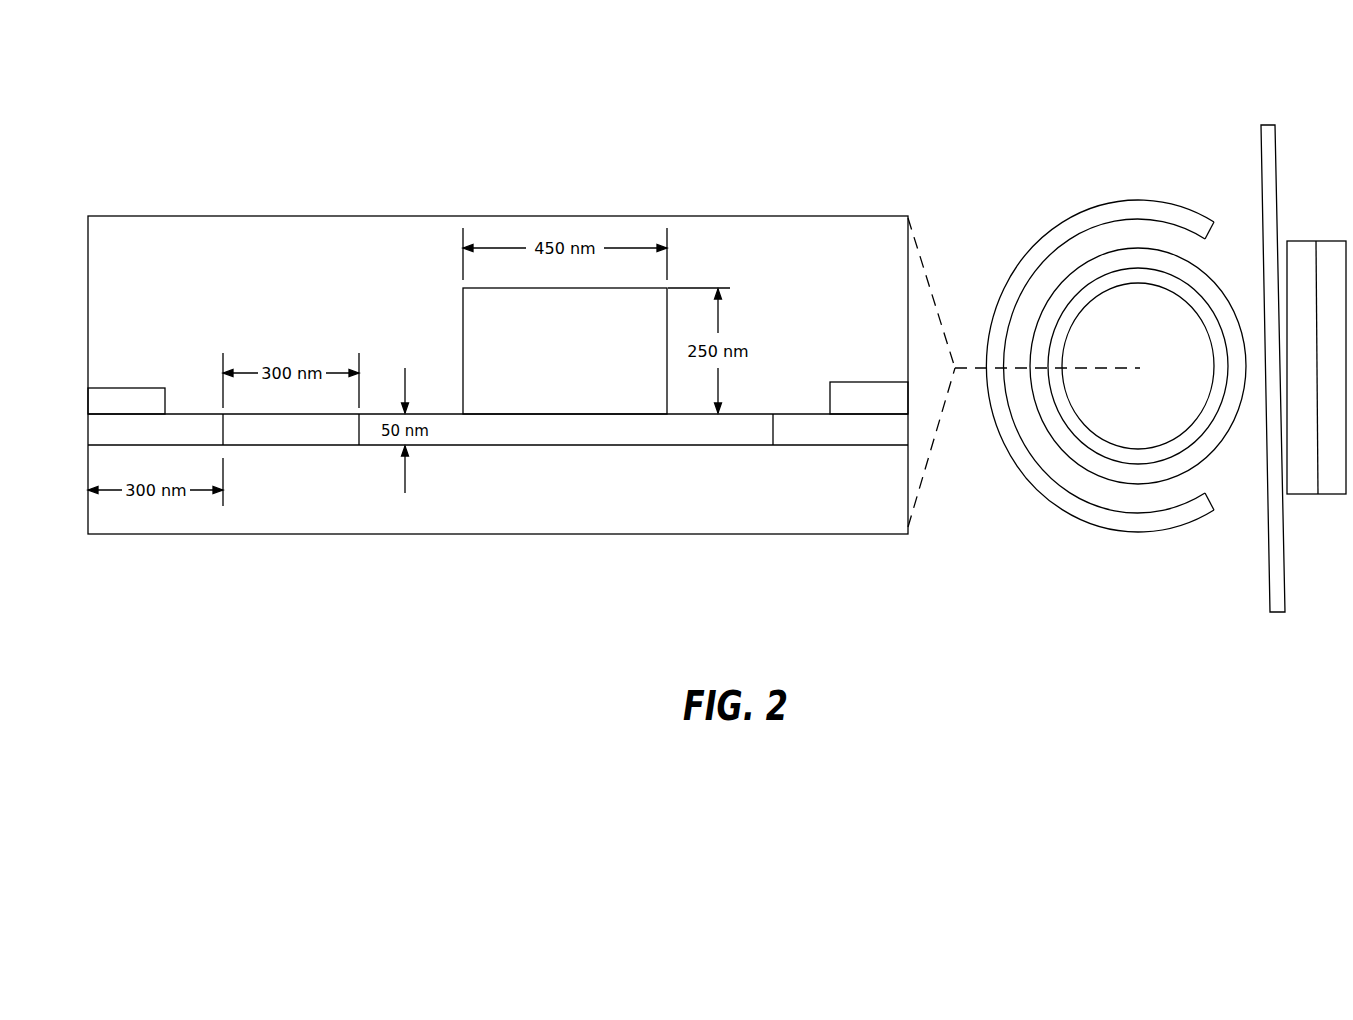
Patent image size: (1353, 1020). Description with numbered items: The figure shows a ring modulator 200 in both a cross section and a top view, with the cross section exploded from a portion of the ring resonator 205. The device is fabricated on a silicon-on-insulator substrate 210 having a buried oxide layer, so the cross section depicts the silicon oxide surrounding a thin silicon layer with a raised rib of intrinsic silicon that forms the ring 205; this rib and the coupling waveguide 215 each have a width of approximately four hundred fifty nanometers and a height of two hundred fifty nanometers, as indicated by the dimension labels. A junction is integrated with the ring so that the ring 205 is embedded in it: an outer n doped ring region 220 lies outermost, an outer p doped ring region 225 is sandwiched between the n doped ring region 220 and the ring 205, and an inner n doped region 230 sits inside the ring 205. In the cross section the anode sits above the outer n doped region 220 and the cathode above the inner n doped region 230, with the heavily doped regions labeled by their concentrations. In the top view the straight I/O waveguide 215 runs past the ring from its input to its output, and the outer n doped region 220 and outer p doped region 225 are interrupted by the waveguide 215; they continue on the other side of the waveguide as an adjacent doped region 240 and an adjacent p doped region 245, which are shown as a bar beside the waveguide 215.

The ring modulator 200 is at (158, 76).
The ring resonator 205 is at (479, 345).
The silicon-on-insulator substrate 210 is at (672, 526).
The waveguide 215 is at (1281, 570).
The outer n doped ring region 220 is at (183, 425).
The outer p doped ring region 225 is at (322, 438).
The inner n doped region 230 is at (865, 430).
The adjacent doped region 240 is at (1330, 496).
The adjacent p doped region 245 is at (1298, 241).